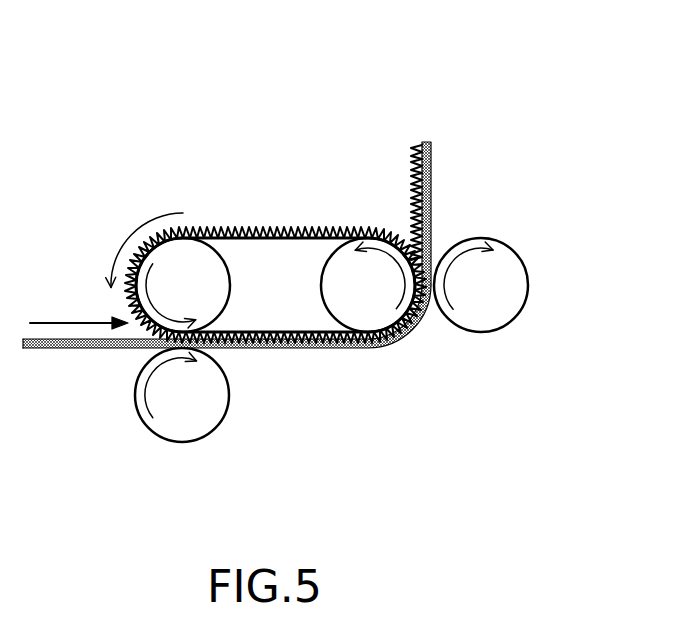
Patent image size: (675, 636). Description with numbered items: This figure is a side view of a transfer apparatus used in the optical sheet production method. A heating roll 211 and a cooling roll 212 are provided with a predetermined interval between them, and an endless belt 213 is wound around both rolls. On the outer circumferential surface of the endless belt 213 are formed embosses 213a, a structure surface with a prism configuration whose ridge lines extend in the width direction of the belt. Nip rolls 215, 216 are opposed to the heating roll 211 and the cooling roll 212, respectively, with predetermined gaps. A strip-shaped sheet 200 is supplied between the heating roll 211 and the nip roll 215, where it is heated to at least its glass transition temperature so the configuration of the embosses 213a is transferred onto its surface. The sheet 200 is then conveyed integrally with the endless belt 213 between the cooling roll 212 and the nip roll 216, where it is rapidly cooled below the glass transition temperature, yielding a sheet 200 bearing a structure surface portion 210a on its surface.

The strip-shaped sheet 200 is at (55, 348).
The structure surface portion 210a is at (422, 167).
The heating roll 211 is at (177, 253).
The cooling roll 212 is at (343, 267).
The endless belt 213 is at (275, 191).
The embosses 213a is at (353, 230).
The nip roll 215 is at (213, 408).
The nip roll 216 is at (500, 310).